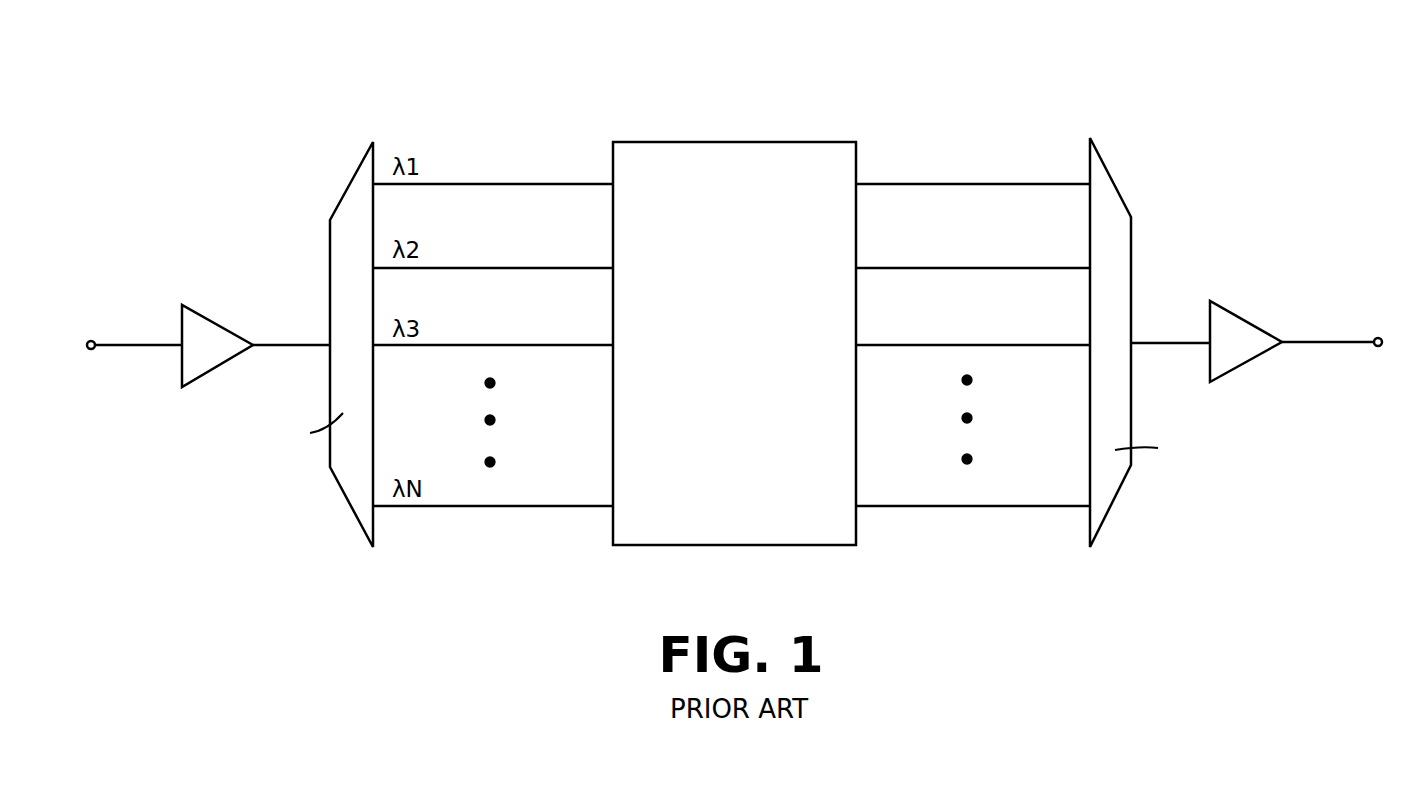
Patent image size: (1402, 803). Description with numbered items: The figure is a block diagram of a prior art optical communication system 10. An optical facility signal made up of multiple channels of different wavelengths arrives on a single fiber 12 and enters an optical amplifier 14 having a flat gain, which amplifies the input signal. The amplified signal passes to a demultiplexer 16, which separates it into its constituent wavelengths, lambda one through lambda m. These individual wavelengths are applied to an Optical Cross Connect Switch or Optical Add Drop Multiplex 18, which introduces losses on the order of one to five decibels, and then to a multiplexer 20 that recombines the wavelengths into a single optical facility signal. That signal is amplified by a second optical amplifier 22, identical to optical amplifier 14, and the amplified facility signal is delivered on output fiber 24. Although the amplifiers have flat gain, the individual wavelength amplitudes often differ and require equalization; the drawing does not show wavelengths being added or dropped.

The optical communication system 10 is at (744, 68).
The single fiber 12 is at (130, 343).
The optical amplifier 14 is at (207, 313).
The demultiplexer 16 is at (345, 188).
The Optical Cross Connect Switch or Optical Add Drop Multiplex 18 is at (858, 162).
The multiplexer 20 is at (1115, 185).
The optical amplifier 22 is at (1247, 317).
The output fiber 24 is at (1325, 345).